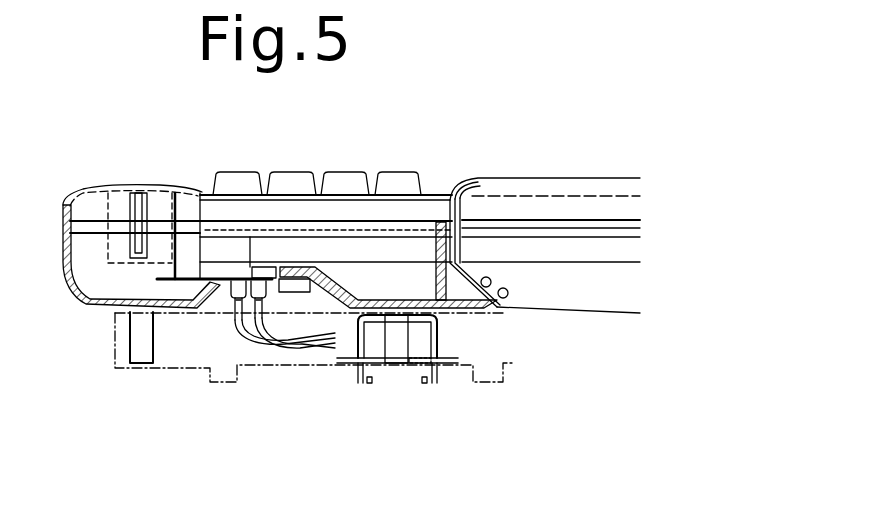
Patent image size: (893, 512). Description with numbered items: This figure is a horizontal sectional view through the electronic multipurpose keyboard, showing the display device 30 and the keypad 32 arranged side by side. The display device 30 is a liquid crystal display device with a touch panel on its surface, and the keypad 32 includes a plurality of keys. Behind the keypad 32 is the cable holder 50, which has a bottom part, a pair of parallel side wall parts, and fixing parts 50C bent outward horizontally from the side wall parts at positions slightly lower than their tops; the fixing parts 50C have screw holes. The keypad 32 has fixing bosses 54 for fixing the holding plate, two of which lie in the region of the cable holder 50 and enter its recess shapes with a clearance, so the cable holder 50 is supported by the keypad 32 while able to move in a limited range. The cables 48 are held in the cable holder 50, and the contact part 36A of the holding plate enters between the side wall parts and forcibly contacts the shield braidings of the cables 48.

The display device 30 is at (550, 210).
The keypad 32 is at (349, 252).
The cables 48 is at (266, 344).
The cable holder 50 is at (438, 338).
The fixing parts 50C is at (348, 368).
The fixing bosses 54 is at (140, 338).
The contact part 36A is at (424, 370).